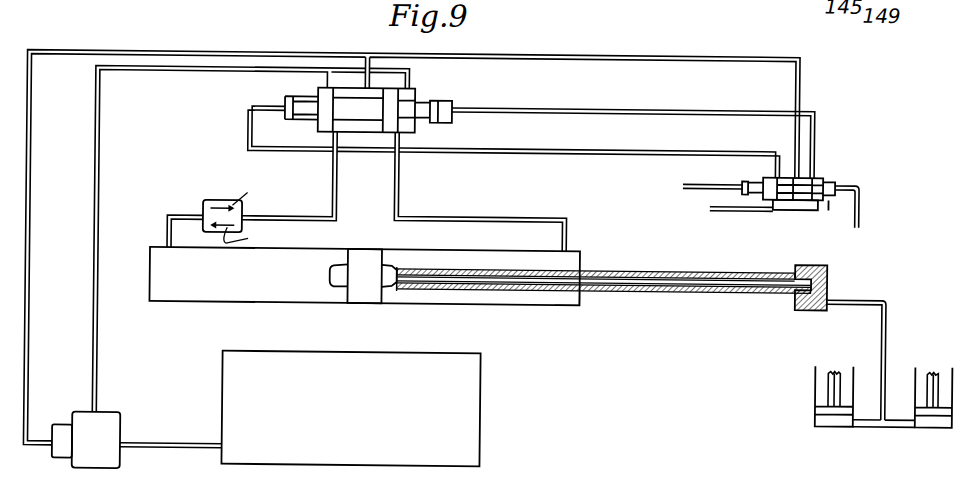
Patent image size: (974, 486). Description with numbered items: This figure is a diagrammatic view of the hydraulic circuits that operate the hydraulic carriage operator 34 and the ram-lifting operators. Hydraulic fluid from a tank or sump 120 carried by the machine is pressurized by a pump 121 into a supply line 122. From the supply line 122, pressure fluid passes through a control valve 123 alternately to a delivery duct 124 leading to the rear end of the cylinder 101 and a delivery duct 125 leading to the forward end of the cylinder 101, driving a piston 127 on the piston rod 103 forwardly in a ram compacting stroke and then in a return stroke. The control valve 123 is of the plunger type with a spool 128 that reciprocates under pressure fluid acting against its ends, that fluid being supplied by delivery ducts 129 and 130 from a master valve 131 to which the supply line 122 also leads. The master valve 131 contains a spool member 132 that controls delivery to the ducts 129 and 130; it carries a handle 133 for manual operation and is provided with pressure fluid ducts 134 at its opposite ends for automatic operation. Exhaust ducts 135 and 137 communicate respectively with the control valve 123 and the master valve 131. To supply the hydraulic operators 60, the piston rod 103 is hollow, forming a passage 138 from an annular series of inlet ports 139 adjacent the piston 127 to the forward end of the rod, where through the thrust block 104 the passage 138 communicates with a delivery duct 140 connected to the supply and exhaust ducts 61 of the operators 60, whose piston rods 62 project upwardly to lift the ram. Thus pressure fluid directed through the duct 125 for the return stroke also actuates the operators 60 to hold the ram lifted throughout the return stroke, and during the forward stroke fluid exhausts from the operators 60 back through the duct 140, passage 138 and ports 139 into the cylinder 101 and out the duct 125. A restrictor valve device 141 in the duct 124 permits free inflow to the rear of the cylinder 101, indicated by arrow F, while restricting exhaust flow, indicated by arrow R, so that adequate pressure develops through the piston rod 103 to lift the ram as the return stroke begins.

The hydraulic carriage operator 34 is at (559, 312).
The hydraulic operator 60 is at (817, 419).
The hydraulic fluid supply and exhaust duct 61 is at (900, 422).
The piston rod 62 is at (841, 373).
The cylinder 101 is at (364, 291).
The piston rod 103 is at (722, 289).
The thrust block 104 is at (829, 276).
The tank 120 is at (489, 443).
The pump 121 is at (64, 438).
The supply line 122 is at (29, 322).
The control valve 123 is at (384, 127).
The delivery duct 124 is at (332, 191).
The delivery duct 125 is at (496, 219).
The piston 127 is at (353, 292).
The spool 128 is at (362, 108).
The delivery duct 129 is at (681, 149).
The delivery duct 130 is at (733, 94).
The master valve 131 is at (794, 200).
The spool member 132 is at (792, 197).
The handle 133 is at (858, 210).
The pressure fluid ducts 134 is at (699, 184).
The exhaust duct 135 is at (101, 155).
The exhaust duct 137 is at (777, 206).
The passage 138 is at (643, 276).
The inlet ports 139 is at (400, 268).
The delivery duct 140 is at (859, 298).
The restrictor valve device 141 is at (238, 193).